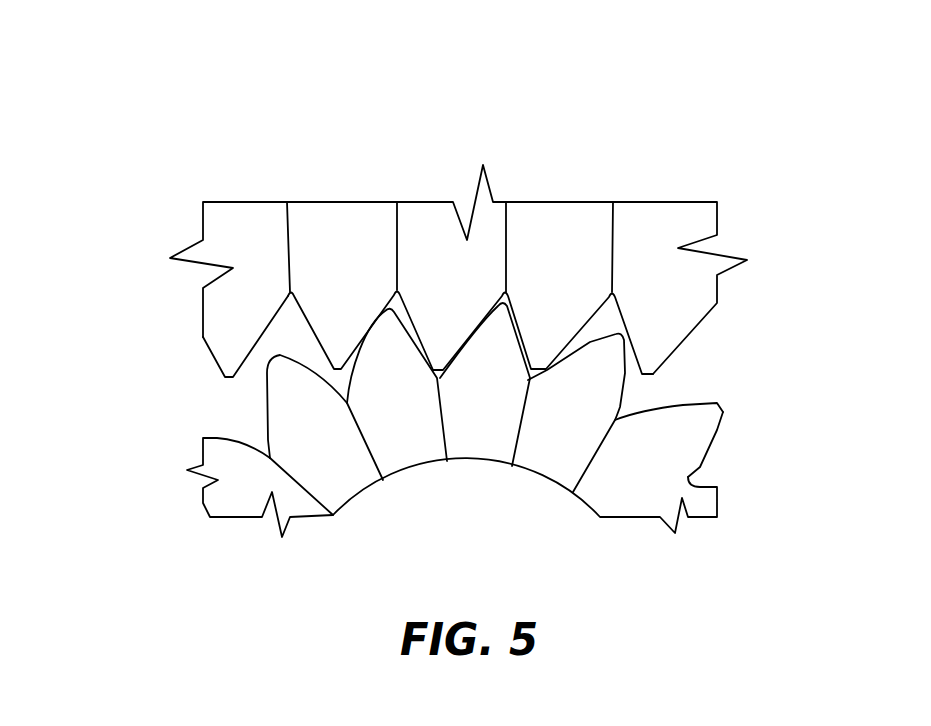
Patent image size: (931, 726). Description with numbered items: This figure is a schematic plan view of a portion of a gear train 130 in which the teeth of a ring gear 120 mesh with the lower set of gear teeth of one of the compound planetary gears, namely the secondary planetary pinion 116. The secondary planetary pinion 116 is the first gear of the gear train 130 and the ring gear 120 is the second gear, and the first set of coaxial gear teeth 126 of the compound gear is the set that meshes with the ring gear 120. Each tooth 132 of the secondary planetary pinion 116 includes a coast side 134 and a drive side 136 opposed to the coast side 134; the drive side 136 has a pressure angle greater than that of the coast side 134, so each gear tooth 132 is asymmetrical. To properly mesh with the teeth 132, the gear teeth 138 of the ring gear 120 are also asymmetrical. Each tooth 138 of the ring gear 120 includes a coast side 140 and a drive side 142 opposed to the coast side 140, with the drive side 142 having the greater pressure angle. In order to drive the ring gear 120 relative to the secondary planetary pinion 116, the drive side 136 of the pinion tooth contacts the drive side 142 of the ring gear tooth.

The gear train 130 is at (528, 114).
The ring gear 120 is at (230, 238).
The secondary planetary pinion 116 is at (435, 436).
The first set of coaxial gear teeth 126 is at (237, 505).
The tooth 132 is at (323, 440).
The coast side 134 is at (713, 440).
The drive side 136 is at (683, 403).
The gear teeth 138 is at (333, 280).
The coast side 140 is at (213, 355).
The drive side 142 is at (258, 338).